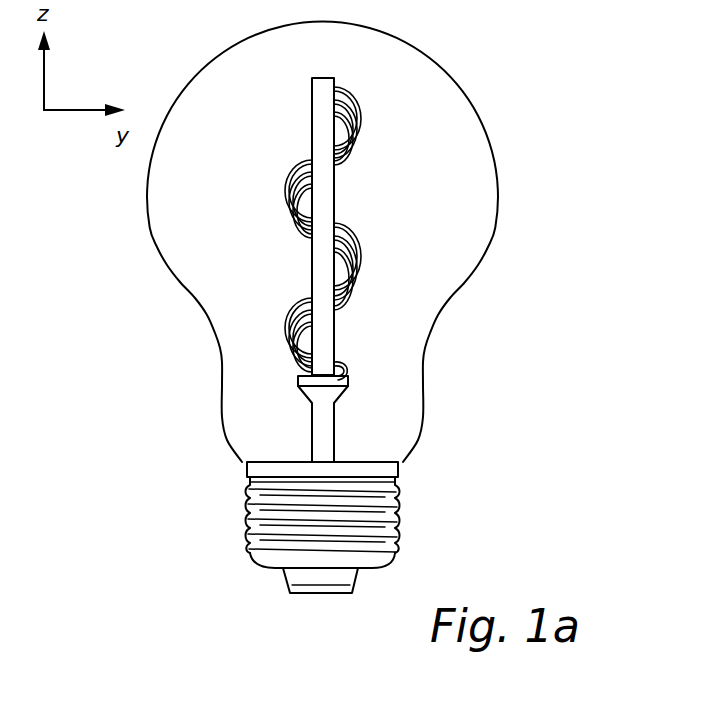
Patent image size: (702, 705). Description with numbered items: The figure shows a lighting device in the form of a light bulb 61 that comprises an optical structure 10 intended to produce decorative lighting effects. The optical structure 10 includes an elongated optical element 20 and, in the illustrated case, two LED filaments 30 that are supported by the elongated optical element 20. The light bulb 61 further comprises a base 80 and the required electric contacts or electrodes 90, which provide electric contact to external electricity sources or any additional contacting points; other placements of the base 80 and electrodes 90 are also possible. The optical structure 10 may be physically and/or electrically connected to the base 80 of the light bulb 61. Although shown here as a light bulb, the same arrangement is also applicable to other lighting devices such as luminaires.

The optical structure 10 is at (254, 66).
The elongated optical element 20 is at (323, 327).
The LED filament 30 is at (356, 90).
The light bulb 61 is at (488, 247).
The base 80 is at (402, 515).
The electrodes 90 is at (338, 397).